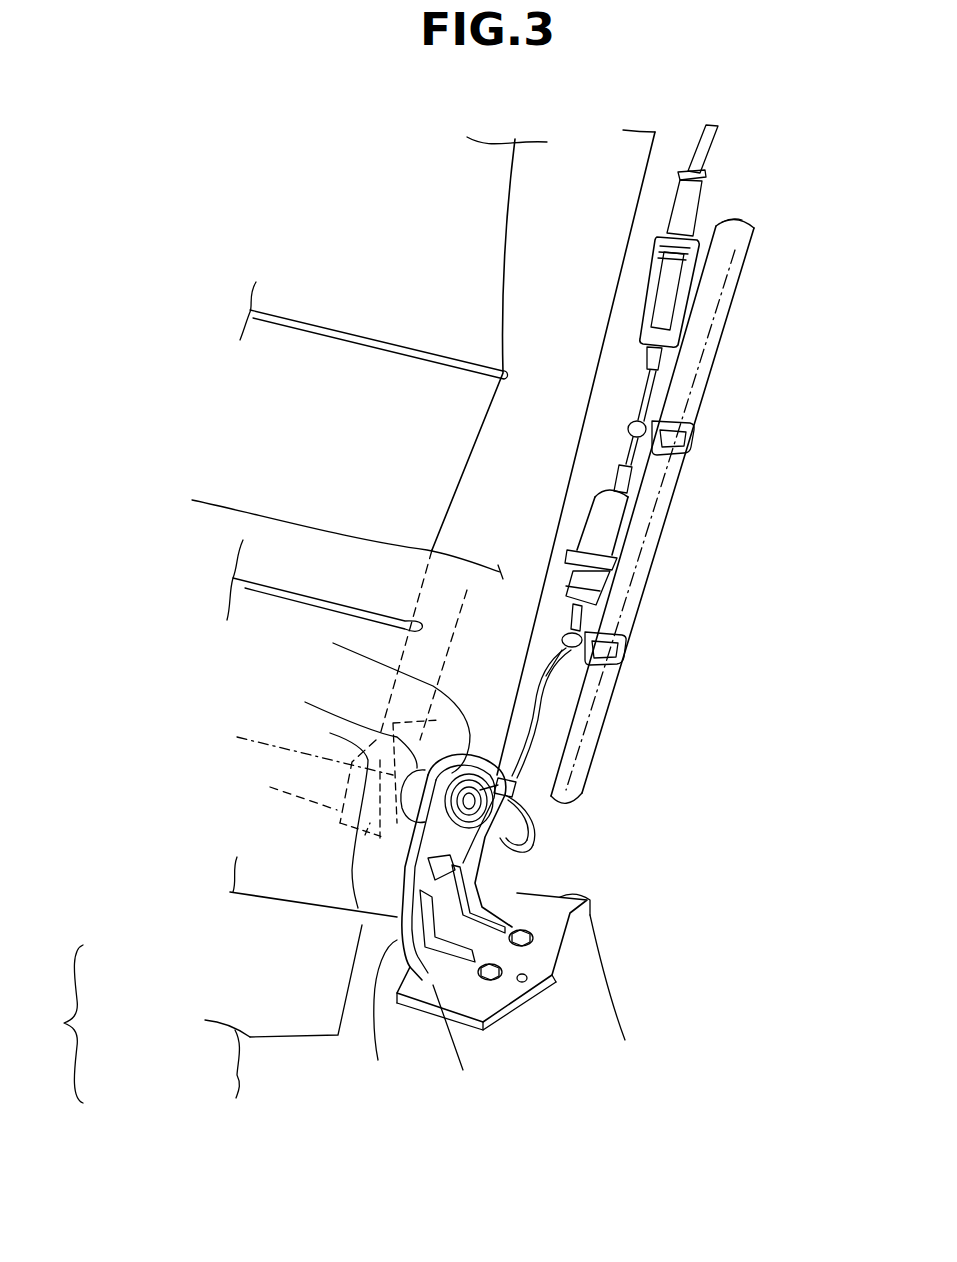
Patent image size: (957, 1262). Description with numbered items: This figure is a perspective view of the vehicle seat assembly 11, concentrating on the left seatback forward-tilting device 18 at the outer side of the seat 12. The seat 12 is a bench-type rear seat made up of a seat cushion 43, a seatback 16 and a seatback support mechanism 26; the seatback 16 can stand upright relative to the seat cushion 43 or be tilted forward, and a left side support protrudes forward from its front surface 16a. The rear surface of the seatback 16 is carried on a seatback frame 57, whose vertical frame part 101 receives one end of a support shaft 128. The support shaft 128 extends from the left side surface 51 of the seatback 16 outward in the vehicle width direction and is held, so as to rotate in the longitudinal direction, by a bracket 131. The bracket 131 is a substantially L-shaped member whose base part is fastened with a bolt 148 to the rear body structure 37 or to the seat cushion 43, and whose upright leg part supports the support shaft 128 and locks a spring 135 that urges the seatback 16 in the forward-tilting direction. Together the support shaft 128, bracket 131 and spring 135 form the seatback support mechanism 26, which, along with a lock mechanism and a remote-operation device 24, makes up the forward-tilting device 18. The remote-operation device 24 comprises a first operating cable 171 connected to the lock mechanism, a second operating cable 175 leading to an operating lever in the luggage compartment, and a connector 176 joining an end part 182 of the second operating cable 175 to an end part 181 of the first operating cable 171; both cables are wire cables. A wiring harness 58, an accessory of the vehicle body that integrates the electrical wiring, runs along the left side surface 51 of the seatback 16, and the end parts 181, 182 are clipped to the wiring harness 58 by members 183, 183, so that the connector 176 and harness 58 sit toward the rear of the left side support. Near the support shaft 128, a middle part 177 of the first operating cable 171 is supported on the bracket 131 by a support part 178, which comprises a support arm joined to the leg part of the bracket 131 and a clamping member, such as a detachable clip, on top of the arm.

The vehicle seat assembly 11 is at (325, 183).
The seat 12 is at (55, 1024).
The seatback 16 is at (280, 905).
The front surface of the seatback 16a is at (341, 447).
The seatback forward-tilting device 18 is at (563, 1000).
The remote-operation device 24 is at (541, 721).
The seatback support mechanism 26 is at (430, 985).
The rear body structure 37 is at (583, 910).
The seat cushion 43 is at (275, 1072).
The left side surface of the seatback 51 is at (329, 553).
The seatback frame 57 is at (270, 787).
The wiring harness 58 is at (722, 348).
The vertical frame part 101 is at (340, 737).
The support shaft 128 is at (342, 791).
The bracket 131 is at (408, 968).
The spring 135 is at (385, 724).
The bolt 148 is at (560, 897).
The first operating cable 171 is at (537, 828).
The second operating cable 175 is at (707, 143).
The connector 176 is at (610, 537).
The middle part of the first operating cable 177 is at (520, 779).
The support part 178 is at (534, 800).
The end part of the first operating cable 181 is at (573, 663).
The end part of the second operating cable 182 is at (630, 457).
The clip member 183 is at (680, 416).